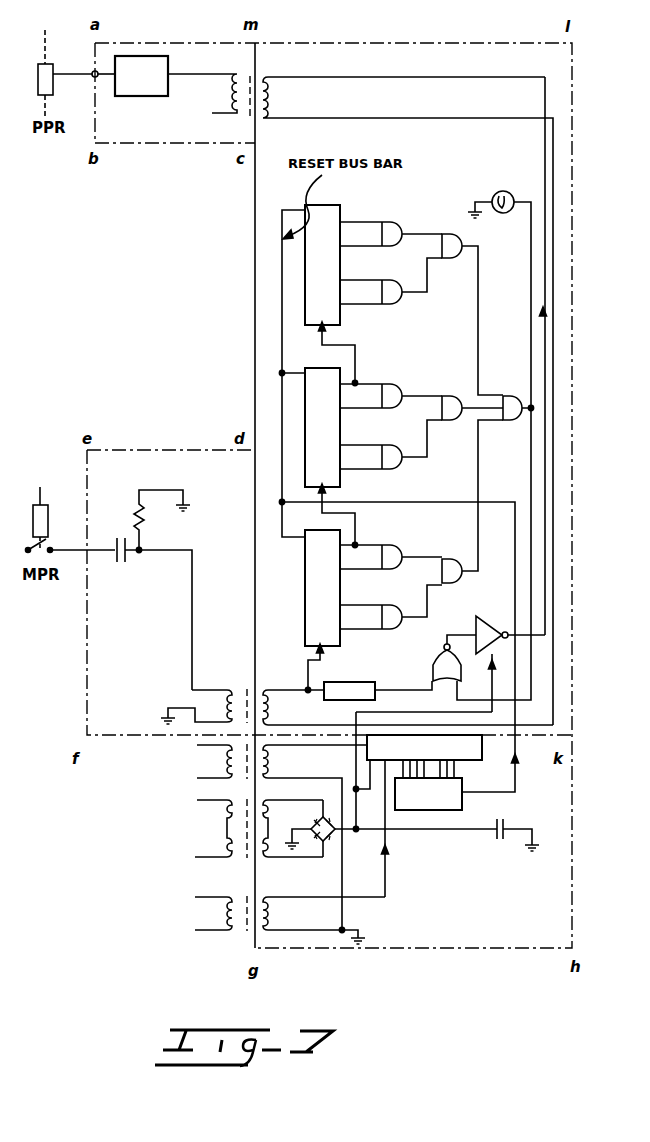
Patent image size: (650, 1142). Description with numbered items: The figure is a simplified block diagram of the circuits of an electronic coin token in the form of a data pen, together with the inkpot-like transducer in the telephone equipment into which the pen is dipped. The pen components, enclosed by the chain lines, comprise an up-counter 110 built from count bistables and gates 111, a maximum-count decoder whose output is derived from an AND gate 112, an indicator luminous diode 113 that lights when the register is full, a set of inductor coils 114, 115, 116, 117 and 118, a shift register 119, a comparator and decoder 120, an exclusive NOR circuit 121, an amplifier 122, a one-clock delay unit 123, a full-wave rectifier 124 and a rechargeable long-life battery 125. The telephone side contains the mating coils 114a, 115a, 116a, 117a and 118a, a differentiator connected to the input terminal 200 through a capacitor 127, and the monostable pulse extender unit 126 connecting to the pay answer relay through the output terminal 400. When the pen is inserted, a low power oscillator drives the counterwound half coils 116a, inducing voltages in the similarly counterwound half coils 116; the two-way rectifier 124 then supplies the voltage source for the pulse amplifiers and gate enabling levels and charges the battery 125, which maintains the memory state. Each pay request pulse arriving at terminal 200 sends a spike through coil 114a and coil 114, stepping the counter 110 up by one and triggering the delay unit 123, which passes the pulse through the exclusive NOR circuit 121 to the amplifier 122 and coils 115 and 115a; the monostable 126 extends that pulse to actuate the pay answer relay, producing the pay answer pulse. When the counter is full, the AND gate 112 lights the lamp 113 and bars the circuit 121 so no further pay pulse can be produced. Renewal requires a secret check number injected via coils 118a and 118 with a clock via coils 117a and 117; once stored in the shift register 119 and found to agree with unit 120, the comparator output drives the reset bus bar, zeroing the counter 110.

The up-counter 110 is at (331, 222).
The AND gates 111 is at (430, 298).
The AND gate 112 is at (514, 397).
The indicator luminous diode 113 is at (506, 190).
The inductor coil 114 is at (408, 707).
The coil 114a is at (196, 695).
The inductor coil 115 is at (408, 401).
The coil 115a is at (202, 93).
The inductor coil 116 is at (293, 841).
The counterwound half coils 116a is at (207, 841).
The inductor coil 117 is at (326, 852).
The clock coil 117a is at (198, 913).
The inductor coil 118 is at (315, 837).
The coil 118a is at (205, 761).
The shift register 119 is at (417, 770).
The comparator and decoder 120 is at (428, 785).
The exclusive NOR circuit 121 is at (441, 655).
The amplifier 122 is at (483, 620).
The one-clock delay unit 123 is at (337, 682).
The full-wave rectifier 124 is at (331, 843).
The rechargeable long-life battery 125 is at (447, 839).
The monostable pulse extender unit 126 is at (136, 56).
The capacitor 127 is at (151, 590).
The input terminal 200 is at (71, 542).
The output terminal 400 is at (88, 66).